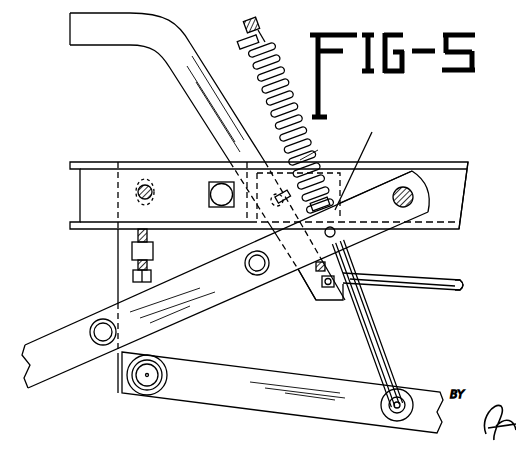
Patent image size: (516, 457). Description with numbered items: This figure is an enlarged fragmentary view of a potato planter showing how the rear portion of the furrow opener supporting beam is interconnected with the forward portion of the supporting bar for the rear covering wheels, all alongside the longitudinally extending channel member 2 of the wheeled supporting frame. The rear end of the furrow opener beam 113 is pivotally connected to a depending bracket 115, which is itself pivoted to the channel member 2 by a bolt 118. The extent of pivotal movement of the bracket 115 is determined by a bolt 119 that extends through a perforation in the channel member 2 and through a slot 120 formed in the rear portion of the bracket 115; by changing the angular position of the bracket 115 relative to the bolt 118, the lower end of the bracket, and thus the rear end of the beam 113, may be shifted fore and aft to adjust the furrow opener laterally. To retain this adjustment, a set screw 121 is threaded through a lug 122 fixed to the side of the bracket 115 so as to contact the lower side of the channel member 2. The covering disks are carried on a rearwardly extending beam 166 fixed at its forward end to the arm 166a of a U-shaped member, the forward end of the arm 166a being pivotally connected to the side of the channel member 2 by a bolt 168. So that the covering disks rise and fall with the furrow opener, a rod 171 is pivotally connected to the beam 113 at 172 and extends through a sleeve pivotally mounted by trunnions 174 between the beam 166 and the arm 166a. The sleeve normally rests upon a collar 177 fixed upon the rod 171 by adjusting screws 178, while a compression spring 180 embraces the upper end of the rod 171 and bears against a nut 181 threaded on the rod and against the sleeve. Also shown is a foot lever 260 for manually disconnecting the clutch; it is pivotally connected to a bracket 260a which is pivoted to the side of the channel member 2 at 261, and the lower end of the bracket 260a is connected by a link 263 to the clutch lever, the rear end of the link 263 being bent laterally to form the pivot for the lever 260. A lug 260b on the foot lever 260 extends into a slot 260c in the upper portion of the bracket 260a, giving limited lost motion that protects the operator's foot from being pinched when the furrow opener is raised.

The channel member 2 is at (456, 193).
The beam 113 is at (303, 405).
The bracket 115 is at (191, 341).
The bolt 118 is at (216, 186).
The bolt 119 is at (145, 187).
The slot 120 is at (140, 205).
The set screw 121 is at (133, 273).
The lug 122 is at (132, 250).
The beam 166 is at (68, 357).
The arm 166a is at (372, 202).
The bolt 168 is at (413, 187).
The rod 171 is at (375, 343).
The pivotal connection 172 is at (383, 398).
The trunnions 174 is at (337, 233).
The collar 177 is at (362, 281).
The adjusting screws 178 is at (330, 292).
The compression spring 180 is at (268, 67).
The nut 181 is at (262, 38).
The foot lever 260 is at (117, 30).
The bracket 260a is at (310, 268).
The lug 260b is at (330, 141).
The slot 260c is at (335, 177).
The pivot 261 is at (372, 162).
The link 263 is at (443, 289).